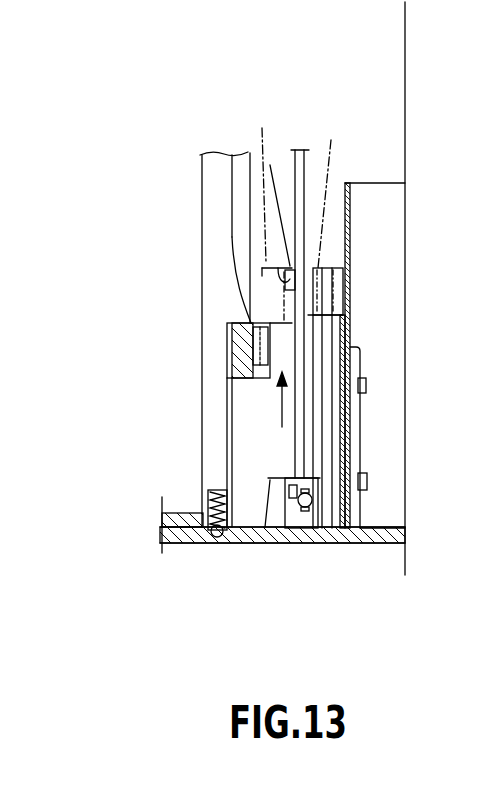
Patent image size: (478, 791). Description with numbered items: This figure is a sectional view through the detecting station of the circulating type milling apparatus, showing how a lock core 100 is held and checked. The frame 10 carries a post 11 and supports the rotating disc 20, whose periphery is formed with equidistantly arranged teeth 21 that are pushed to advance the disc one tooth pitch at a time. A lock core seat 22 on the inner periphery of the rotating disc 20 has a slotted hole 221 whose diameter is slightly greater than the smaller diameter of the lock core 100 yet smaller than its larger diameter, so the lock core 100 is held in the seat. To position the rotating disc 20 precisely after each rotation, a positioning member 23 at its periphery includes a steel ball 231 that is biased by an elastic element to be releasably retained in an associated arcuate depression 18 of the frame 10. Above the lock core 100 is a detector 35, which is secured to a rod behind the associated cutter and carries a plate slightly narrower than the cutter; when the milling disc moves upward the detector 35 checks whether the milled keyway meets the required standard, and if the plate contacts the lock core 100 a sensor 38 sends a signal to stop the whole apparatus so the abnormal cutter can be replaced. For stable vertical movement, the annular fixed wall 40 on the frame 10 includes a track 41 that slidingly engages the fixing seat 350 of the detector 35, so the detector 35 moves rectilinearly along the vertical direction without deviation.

The frame 10 is at (390, 545).
The post 11 is at (248, 153).
The arcuate depression 18 is at (221, 540).
The rotating disc 20 is at (228, 390).
The tooth 21 is at (184, 512).
The lock core seat 22 is at (240, 338).
The positioning member 23 is at (214, 490).
The steel ball 231 is at (208, 505).
The lock core 100 is at (224, 339).
The slotted hole 221 is at (232, 155).
The detector 35 is at (263, 138).
The sensor 38 is at (270, 165).
The fixing seat 350 is at (331, 144).
The annular fixed wall 40 is at (348, 203).
The track 41 is at (345, 332).